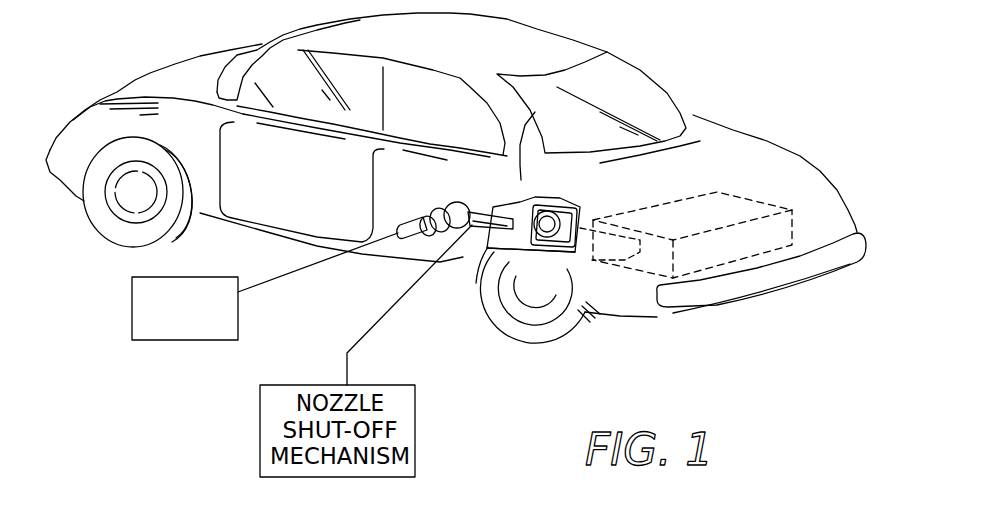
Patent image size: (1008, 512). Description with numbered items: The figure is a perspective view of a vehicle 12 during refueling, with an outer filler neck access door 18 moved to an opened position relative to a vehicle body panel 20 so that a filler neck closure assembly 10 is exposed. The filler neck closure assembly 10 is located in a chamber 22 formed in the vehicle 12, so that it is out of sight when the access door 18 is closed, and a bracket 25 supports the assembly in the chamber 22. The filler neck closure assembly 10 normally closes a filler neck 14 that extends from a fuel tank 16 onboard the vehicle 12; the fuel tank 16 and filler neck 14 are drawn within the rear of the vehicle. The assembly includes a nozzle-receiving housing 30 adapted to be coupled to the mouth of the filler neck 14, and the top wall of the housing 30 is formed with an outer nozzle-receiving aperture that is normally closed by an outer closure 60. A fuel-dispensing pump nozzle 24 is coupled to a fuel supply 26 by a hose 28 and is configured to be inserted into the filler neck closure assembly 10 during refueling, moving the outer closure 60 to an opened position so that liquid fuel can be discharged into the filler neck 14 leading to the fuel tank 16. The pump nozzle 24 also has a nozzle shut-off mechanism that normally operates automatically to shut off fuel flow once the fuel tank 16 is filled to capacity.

The filler neck closure assembly 10 is at (556, 216).
The vehicle 12 is at (456, 165).
The filler neck 14 is at (639, 301).
The fuel tank 16 is at (717, 192).
The outer filler neck access door 18 is at (507, 295).
The vehicle body panel 20 is at (549, 137).
The chamber 22 is at (557, 317).
The fuel-dispensing pump nozzle 24 is at (446, 198).
The bracket 25 is at (531, 272).
The fuel supply 26 is at (238, 322).
The hose 28 is at (320, 264).
The nozzle-receiving housing 30 is at (566, 206).
The outer closure 60 is at (520, 201).